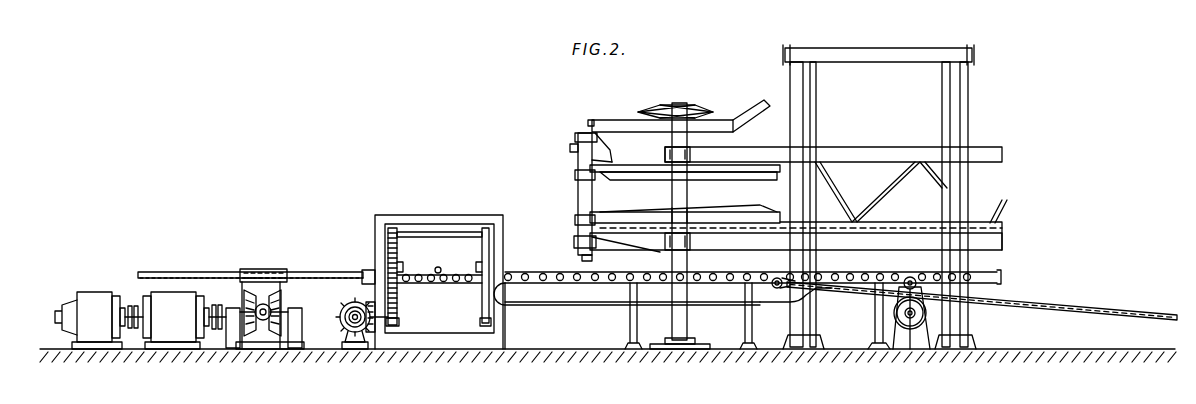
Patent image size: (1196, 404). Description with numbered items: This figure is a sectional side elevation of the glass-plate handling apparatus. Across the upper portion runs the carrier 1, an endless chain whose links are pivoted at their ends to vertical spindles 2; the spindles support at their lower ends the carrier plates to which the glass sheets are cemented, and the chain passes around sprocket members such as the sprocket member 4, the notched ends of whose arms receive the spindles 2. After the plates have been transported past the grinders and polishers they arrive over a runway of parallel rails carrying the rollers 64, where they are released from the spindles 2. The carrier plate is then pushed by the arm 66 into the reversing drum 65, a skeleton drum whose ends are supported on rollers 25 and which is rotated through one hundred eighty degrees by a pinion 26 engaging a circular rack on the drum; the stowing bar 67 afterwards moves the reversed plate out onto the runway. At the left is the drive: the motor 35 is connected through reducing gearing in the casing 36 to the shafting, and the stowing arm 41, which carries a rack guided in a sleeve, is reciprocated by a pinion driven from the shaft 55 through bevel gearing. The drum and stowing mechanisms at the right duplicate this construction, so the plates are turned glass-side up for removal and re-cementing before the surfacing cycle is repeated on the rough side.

The carrier 1 is at (575, 152).
The vertical spindles 2 is at (578, 192).
The sprocket member 4 is at (718, 219).
The rollers 25 is at (487, 325).
The pinion 26 is at (397, 322).
The motor 35 is at (97, 296).
The casing 36 is at (177, 333).
The stowing arm 41 is at (218, 271).
The shaft 55 is at (268, 321).
The rollers 64 is at (562, 272).
The reversing drum 65 is at (398, 246).
The arm 66 is at (1057, 294).
The stowing bar 67 is at (442, 268).